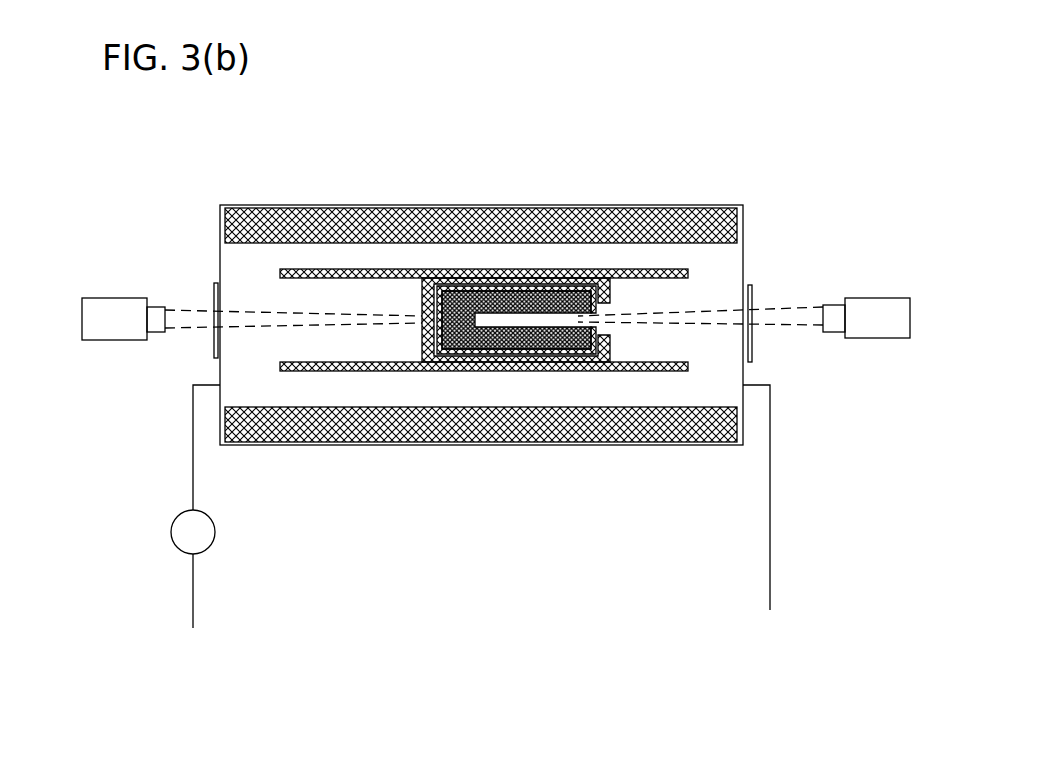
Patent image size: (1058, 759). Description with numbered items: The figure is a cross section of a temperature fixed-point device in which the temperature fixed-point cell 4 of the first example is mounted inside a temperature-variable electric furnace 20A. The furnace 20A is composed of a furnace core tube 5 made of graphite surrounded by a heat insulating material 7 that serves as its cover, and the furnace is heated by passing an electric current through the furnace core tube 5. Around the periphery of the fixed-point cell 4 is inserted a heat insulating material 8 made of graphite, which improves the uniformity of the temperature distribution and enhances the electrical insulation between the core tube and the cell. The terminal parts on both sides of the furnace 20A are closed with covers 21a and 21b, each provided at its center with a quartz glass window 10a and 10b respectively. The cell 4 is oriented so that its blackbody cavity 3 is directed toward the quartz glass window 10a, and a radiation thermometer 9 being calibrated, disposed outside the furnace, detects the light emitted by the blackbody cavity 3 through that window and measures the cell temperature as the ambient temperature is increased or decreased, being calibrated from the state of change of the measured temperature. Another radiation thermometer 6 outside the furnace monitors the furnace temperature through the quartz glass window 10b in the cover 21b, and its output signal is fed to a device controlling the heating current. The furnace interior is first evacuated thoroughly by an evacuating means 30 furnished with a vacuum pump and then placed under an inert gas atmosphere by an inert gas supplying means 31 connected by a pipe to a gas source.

The temperature-variable electric furnace 20A is at (481, 342).
The heat insulating material 7 is at (330, 445).
The furnace core tube 5 is at (347, 270).
The heat insulating material 8 is at (477, 356).
The temperature fixed-point cell 4 is at (507, 278).
The blackbody cavity 3 is at (582, 352).
The cover 21b is at (220, 267).
The cover 21a is at (743, 243).
The radiation thermometer 6 is at (105, 320).
The radiation thermometer 9 is at (870, 307).
The quartz glass window 10b is at (260, 353).
The quartz glass window 10a is at (752, 342).
The inert gas supplying means 31 is at (770, 548).
The evacuating means 30 is at (214, 538).